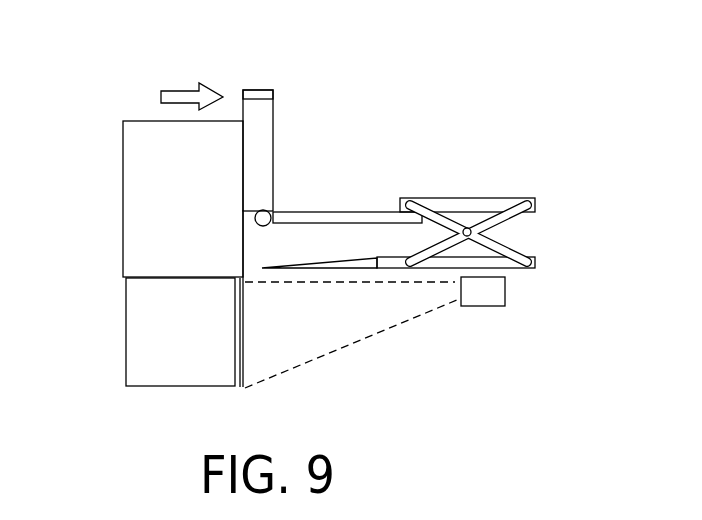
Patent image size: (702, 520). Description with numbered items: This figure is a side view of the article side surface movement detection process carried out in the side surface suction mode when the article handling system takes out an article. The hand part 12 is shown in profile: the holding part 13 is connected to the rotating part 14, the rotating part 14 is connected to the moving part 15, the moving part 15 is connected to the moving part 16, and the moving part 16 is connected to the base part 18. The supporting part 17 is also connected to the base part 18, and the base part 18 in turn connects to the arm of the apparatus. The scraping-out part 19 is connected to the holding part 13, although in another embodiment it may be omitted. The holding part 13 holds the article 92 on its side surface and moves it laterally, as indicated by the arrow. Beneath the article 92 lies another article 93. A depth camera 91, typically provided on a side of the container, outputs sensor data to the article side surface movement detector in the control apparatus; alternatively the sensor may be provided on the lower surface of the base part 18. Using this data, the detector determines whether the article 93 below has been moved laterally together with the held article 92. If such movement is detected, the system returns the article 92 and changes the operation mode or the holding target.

The hand part 12 is at (457, 148).
The holding part 13 is at (275, 138).
The rotating part 14 is at (275, 210).
The moving part 15 is at (380, 212).
The moving part 16 is at (508, 198).
The supporting part 17 is at (325, 258).
The base part 18 is at (535, 262).
The scraping-out part 19 is at (275, 93).
The depth camera 91 is at (497, 308).
The article 92 is at (126, 328).
The article 93 is at (123, 193).